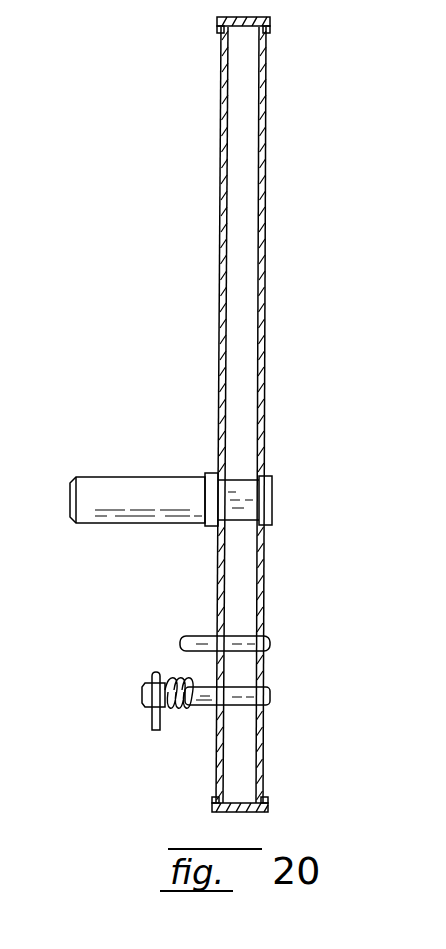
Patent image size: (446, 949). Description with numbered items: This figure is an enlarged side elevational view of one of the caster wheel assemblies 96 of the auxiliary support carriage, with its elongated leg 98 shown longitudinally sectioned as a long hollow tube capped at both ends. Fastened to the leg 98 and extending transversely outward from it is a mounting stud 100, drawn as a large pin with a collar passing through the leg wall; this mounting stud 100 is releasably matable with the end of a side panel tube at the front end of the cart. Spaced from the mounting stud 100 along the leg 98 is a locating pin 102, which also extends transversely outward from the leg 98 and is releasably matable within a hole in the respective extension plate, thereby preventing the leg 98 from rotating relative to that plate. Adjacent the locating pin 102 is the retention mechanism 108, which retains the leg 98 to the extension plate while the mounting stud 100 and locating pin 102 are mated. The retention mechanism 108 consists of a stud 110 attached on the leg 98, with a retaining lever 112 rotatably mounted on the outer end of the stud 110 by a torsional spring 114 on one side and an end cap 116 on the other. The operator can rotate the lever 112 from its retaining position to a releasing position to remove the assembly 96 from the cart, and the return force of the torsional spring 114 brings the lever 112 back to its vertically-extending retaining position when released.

The caster wheel assembly 96 is at (313, 271).
The leg 98 is at (266, 160).
The mounting stud 100 is at (128, 476).
The locating pin 102 is at (198, 635).
The retention mechanism 108 is at (146, 663).
The stud 110 is at (204, 708).
The retaining lever 112 is at (153, 735).
The torsional spring 114 is at (178, 710).
The end cap 116 is at (151, 708).